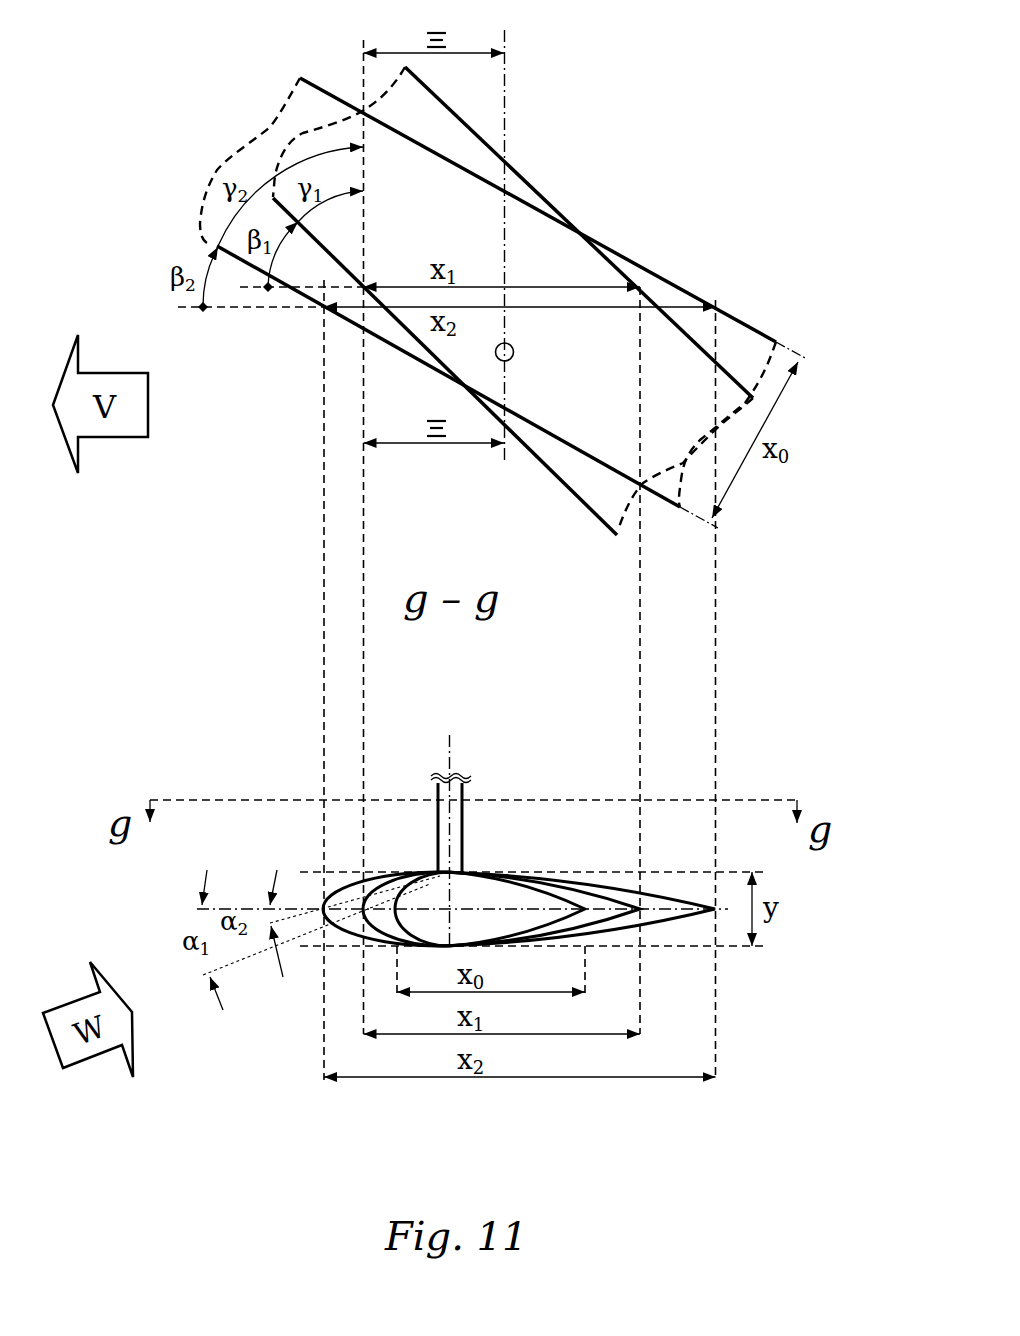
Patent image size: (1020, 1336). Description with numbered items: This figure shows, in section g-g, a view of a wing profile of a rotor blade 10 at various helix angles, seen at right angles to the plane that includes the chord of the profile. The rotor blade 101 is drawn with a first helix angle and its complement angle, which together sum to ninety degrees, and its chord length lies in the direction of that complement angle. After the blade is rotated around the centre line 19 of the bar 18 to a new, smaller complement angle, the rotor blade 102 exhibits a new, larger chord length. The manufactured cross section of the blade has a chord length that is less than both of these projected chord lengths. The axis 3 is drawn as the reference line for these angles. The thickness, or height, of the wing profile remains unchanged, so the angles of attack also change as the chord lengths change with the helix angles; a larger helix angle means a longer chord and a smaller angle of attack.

The rotation axis 3 is at (509, 78).
The rotor blade 10 is at (488, 301).
The rotor blade 101 is at (541, 187).
The rotor blade 102 is at (673, 279).
The bar 18 is at (513, 361).
The centre line 19 is at (456, 762).